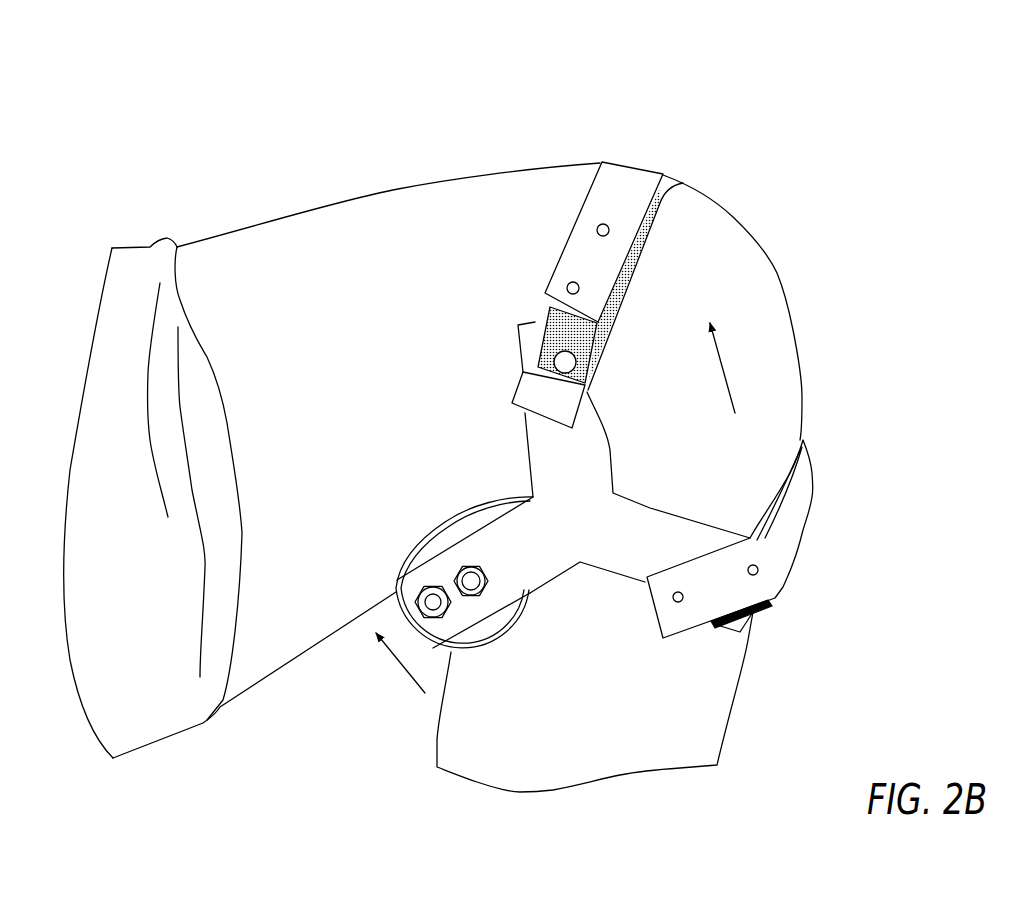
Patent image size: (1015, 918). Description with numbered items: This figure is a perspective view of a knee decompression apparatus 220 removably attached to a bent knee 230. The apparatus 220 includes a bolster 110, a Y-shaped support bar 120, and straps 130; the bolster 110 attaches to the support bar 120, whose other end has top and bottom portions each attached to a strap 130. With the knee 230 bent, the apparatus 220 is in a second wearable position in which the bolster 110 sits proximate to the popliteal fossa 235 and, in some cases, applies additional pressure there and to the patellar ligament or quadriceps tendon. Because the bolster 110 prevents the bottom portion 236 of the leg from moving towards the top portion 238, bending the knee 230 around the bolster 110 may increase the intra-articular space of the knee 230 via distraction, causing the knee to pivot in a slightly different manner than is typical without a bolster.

The bolster 110 is at (493, 627).
The support bar 120 is at (610, 498).
The strap 130 is at (683, 183).
The knee decompression apparatus 220 is at (682, 107).
The bent knee 230 is at (733, 258).
The popliteal fossa 235 is at (480, 492).
The bottom portion of a leg 236 is at (673, 733).
The top portion of a leg 238 is at (319, 225).